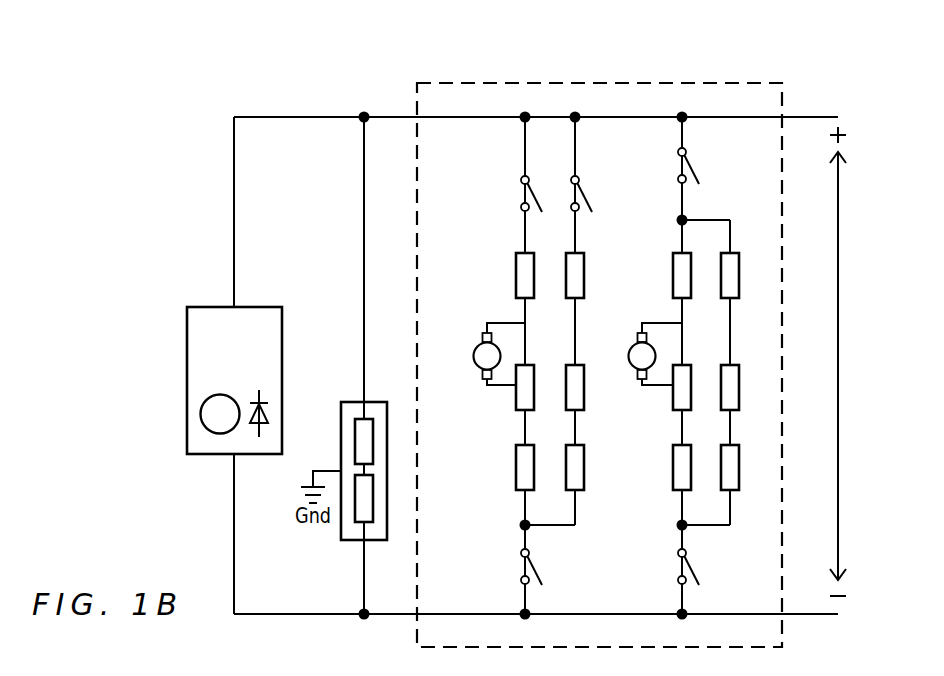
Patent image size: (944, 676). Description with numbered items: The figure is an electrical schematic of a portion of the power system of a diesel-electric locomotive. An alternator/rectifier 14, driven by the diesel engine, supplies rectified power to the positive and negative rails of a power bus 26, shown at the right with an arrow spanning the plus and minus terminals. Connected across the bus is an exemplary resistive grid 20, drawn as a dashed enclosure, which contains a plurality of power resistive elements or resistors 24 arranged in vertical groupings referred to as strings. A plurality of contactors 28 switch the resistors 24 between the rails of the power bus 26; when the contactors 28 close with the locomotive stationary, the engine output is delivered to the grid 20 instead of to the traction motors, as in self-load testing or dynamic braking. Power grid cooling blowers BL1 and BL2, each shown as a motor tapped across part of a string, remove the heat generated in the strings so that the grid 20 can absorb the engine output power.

The alternator/rectifier 14 is at (218, 307).
The resistive grid 20 is at (567, 83).
The power resistive elements 24 is at (584, 270).
The power bus 26 is at (838, 400).
The contactors 28 is at (532, 188).
The power grid cooling blower BL1 is at (510, 320).
The power grid cooling blower BL2 is at (665, 320).